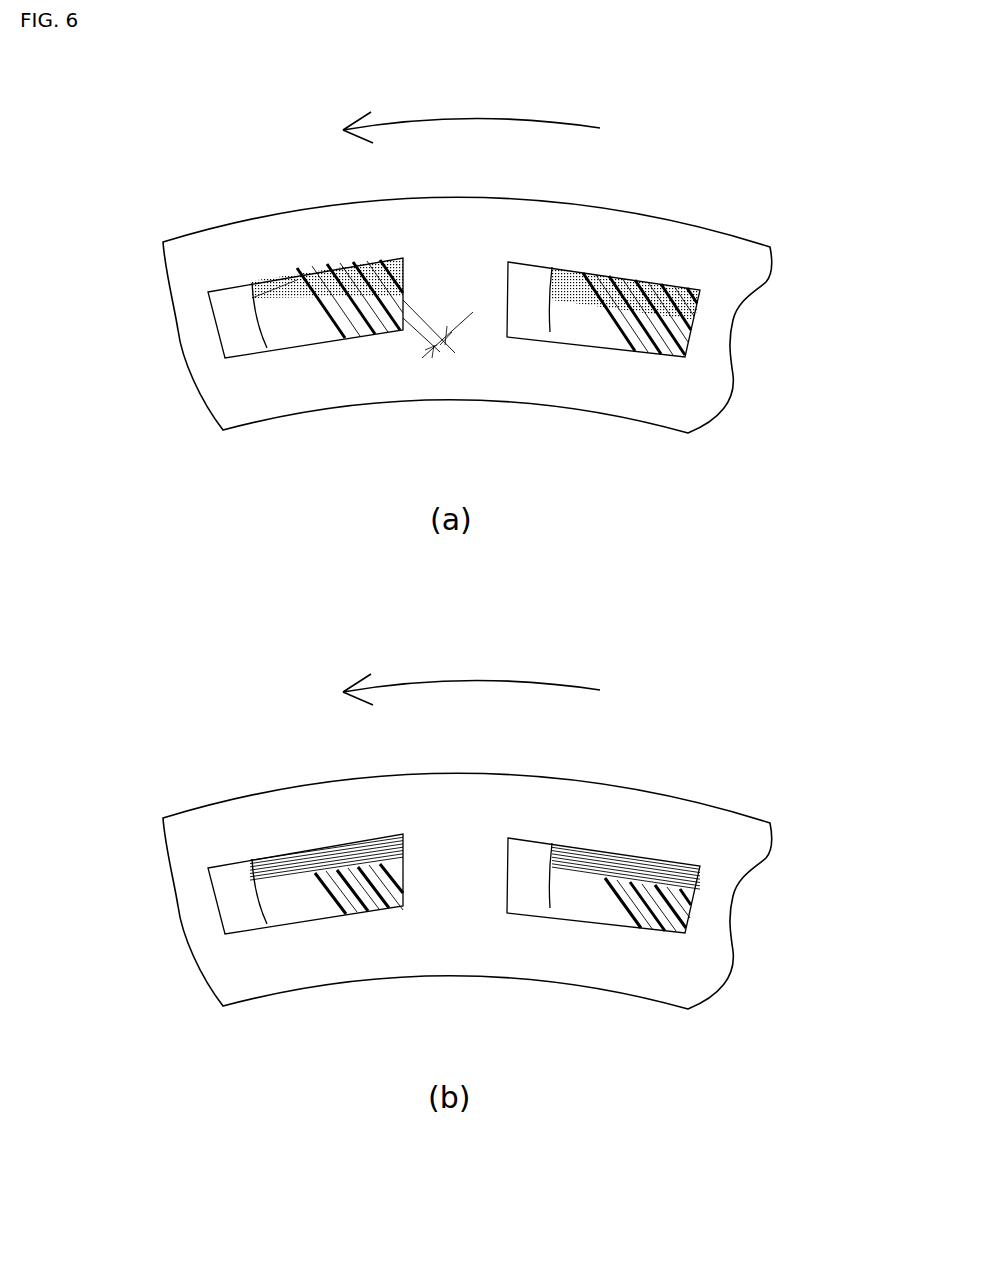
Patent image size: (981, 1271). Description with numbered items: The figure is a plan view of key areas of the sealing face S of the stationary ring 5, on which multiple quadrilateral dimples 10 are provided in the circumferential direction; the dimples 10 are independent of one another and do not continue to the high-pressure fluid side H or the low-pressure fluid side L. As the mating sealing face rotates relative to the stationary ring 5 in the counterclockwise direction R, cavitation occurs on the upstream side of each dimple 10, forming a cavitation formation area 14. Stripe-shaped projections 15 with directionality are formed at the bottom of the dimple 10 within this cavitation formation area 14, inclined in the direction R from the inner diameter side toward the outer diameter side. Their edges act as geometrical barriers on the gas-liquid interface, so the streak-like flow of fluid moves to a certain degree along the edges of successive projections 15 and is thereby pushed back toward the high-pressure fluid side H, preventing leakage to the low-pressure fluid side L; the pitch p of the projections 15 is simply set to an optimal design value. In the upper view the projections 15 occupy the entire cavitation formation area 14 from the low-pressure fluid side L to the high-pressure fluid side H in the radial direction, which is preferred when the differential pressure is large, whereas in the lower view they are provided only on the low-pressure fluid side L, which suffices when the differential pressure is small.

The stationary ring 5 is at (617, 200).
The dimple 10 is at (321, 248).
The cavitation formation area 14 is at (257, 307).
The stripe-shaped projections with directionality 15 is at (355, 332).
The sealing face S is at (740, 260).
The high-pressure fluid side H is at (173, 154).
The low-pressure fluid side L is at (298, 482).
The counterclockwise direction R is at (471, 396).
The pitch p is at (438, 339).